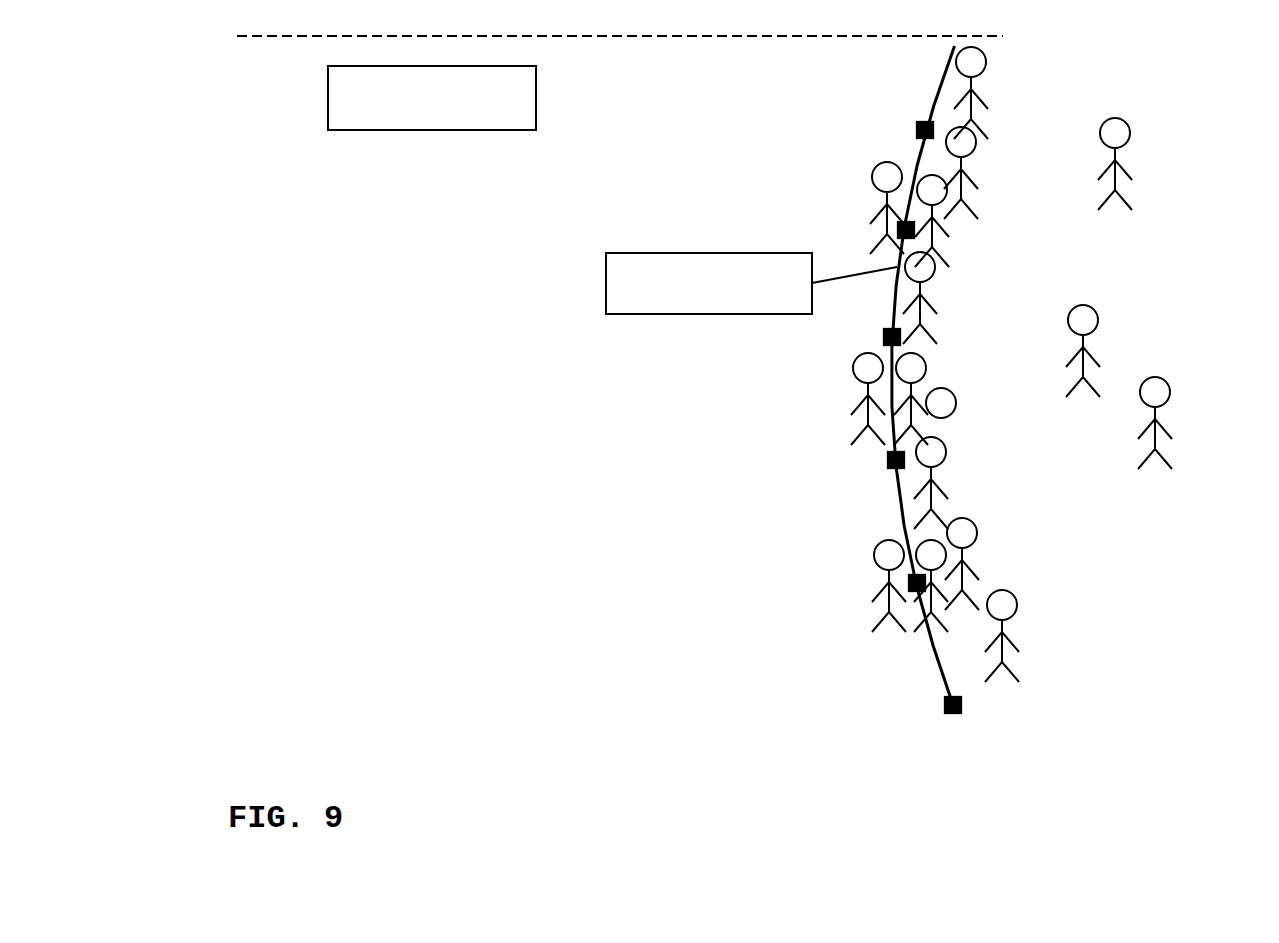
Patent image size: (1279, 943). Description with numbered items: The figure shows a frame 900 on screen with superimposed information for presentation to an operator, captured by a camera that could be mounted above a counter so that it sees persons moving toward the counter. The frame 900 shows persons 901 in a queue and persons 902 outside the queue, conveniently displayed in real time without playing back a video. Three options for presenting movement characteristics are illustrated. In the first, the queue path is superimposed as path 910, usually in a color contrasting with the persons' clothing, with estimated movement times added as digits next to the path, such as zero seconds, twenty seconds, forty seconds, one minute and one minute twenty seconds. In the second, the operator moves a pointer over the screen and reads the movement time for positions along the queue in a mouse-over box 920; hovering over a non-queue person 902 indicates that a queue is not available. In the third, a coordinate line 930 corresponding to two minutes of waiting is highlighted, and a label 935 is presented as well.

The frame 900 is at (1141, 693).
The persons in a queue 901 is at (931, 282).
The persons outside the queue 902 is at (1172, 403).
The path 910 is at (933, 655).
The mouse-over box 920 is at (664, 252).
The line 930 is at (628, 38).
The label 935 is at (326, 106).